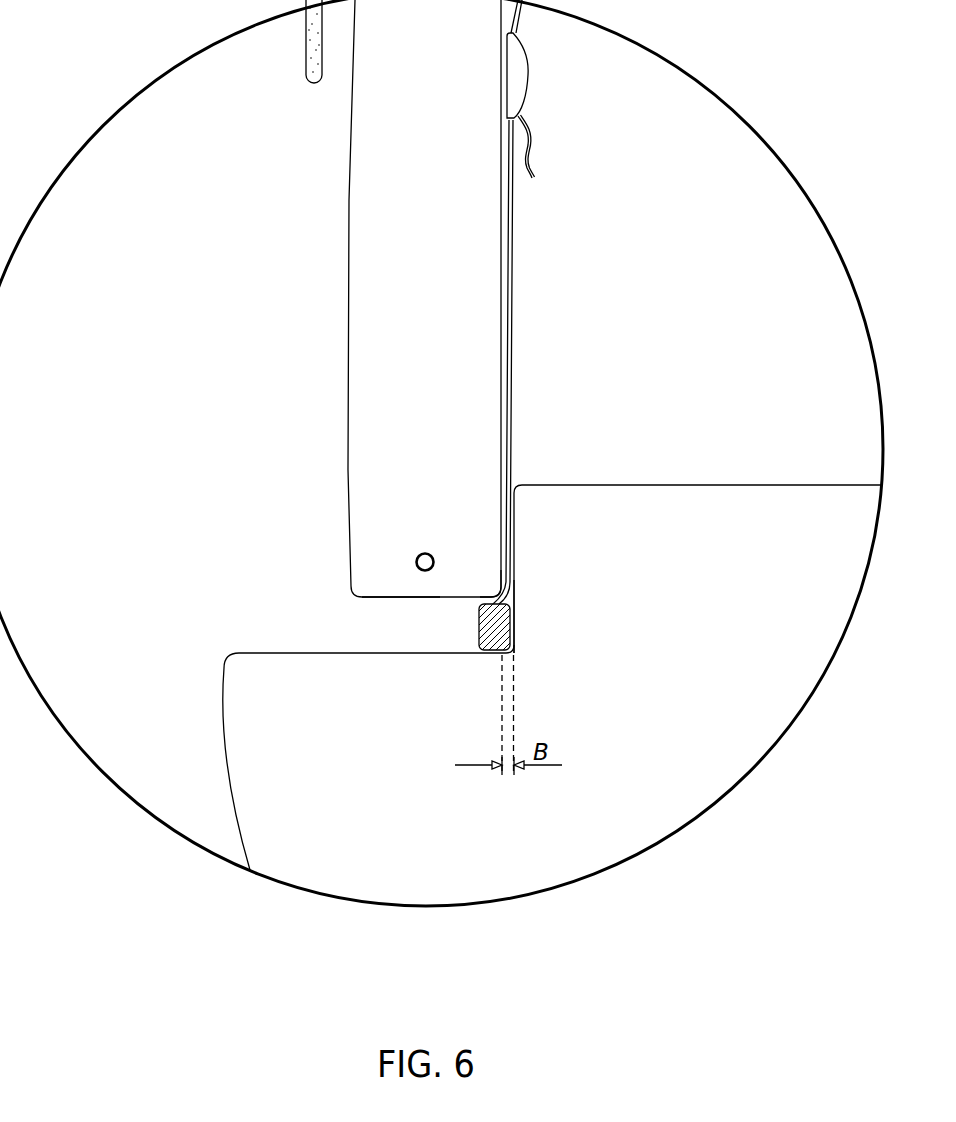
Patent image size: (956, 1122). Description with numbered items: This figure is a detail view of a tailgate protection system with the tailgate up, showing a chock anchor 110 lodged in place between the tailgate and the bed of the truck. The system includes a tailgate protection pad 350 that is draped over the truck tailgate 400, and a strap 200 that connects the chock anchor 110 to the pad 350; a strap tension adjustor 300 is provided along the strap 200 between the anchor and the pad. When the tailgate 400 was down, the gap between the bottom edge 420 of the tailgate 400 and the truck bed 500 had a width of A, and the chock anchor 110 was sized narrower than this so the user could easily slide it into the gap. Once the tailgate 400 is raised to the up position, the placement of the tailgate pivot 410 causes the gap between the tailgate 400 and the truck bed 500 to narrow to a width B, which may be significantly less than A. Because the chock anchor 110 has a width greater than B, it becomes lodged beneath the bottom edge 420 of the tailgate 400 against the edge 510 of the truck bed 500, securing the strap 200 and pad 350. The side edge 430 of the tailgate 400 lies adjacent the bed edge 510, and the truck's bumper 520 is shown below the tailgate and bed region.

The chock anchor 110 is at (510, 636).
The strap 200 is at (513, 265).
The strap tension adjustor 300 is at (528, 82).
The tailgate protection pad 350 is at (306, 73).
The truck tailgate 400 is at (445, 187).
The tailgate pivot 410 is at (427, 552).
The bottom edge of tailgate 420 is at (391, 597).
The side edge of tailgate 430 is at (501, 568).
The truck bed 500 is at (703, 484).
The edge of truck bed 510 is at (515, 603).
The bumper 520 is at (323, 766).